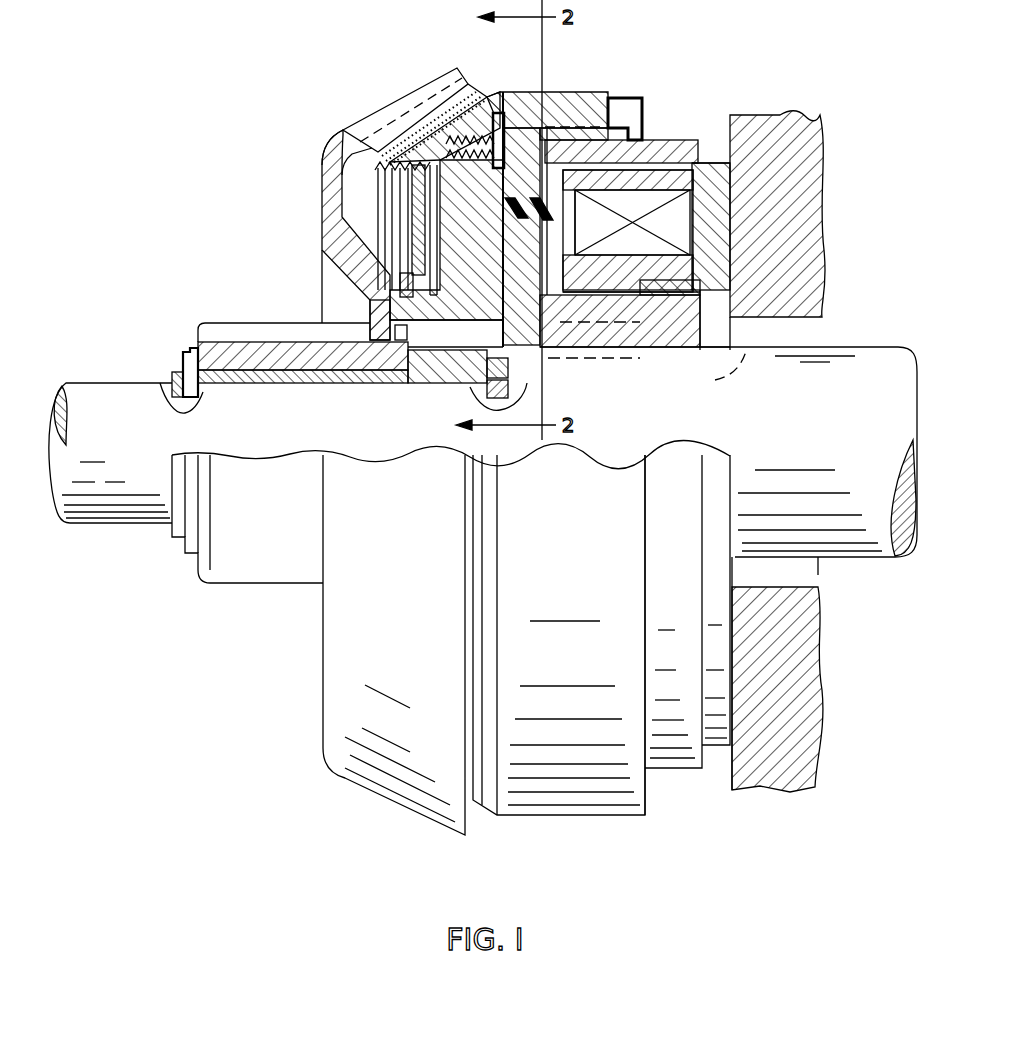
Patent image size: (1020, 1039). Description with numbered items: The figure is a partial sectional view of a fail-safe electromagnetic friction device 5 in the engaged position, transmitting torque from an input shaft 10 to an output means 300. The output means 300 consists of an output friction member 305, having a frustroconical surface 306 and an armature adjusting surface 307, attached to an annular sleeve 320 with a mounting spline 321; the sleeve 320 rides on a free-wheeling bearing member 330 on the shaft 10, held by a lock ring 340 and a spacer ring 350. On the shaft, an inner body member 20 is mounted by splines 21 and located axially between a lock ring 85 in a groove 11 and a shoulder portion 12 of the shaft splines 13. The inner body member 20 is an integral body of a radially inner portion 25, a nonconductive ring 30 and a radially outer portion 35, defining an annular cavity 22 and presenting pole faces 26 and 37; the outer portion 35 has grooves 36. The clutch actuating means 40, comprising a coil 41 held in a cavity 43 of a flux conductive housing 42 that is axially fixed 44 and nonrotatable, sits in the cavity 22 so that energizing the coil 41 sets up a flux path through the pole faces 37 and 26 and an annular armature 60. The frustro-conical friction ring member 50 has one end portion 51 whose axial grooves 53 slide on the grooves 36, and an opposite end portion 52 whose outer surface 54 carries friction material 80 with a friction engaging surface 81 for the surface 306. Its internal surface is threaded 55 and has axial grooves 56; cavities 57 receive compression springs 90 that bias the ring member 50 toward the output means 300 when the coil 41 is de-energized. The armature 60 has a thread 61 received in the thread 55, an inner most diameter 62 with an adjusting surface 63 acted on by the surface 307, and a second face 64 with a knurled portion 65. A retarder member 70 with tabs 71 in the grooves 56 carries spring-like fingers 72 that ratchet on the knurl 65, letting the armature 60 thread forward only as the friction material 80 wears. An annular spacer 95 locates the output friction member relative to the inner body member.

The fail-safe electromagnetic friction device 5 is at (303, 851).
The input shaft 10 is at (865, 350).
The groove 11 is at (492, 383).
The shoulder portion 12 is at (700, 380).
The splines 13 is at (645, 380).
The inner body member 20 is at (700, 305).
The splines 21 is at (715, 340).
The annular cavity 22 is at (660, 283).
The radially inner member portion 25 is at (665, 350).
The pole face 26 is at (500, 268).
The nonconductive ring 30 is at (568, 235).
The radially outer member portion 35 is at (598, 188).
The grooves 36 is at (578, 118).
The pole face 37 is at (503, 115).
The clutch actuating means 40 is at (712, 142).
The electromagnetic winding or coil 41 is at (635, 245).
The flux conductive housing 42 is at (722, 212).
The cavity 43 is at (660, 185).
The axially fixed mounting 44 is at (790, 133).
The friction ring member 50 is at (497, 82).
The one end portion 51 is at (576, 100).
The opposite end portion 52 is at (400, 105).
The axial grooves or protrusions 53 is at (617, 135).
The outer surface 54 is at (482, 90).
The threaded internal surface 55 is at (328, 200).
The axial grooves 56 is at (327, 165).
The cavities 57 is at (438, 78).
The armature 60 is at (490, 322).
The thread 61 is at (487, 210).
The inner most diameter 62 is at (445, 322).
The adjusting surface 63 is at (400, 318).
The second face 64 is at (480, 316).
The knurled portion 65 is at (437, 235).
The retarder member 70 is at (408, 290).
The tabs 71 is at (380, 122).
The spring-like fingers 72 is at (485, 258).
The friction material 80 is at (445, 95).
The friction engaging surface 81 is at (412, 95).
The lock ring 85 is at (510, 370).
The compression springs 90 is at (492, 178).
The annular spacer 95 is at (415, 378).
The output means 300 is at (252, 116).
The output friction member 305 is at (322, 195).
The frustroconical surface 306 is at (337, 114).
The armature adjusting surface 307 is at (372, 303).
The annular sleeve 320 is at (278, 360).
The spline 321 is at (236, 320).
The bearing member 330 is at (220, 384).
The lock ring 340 is at (173, 378).
The spacer ring 350 is at (190, 350).